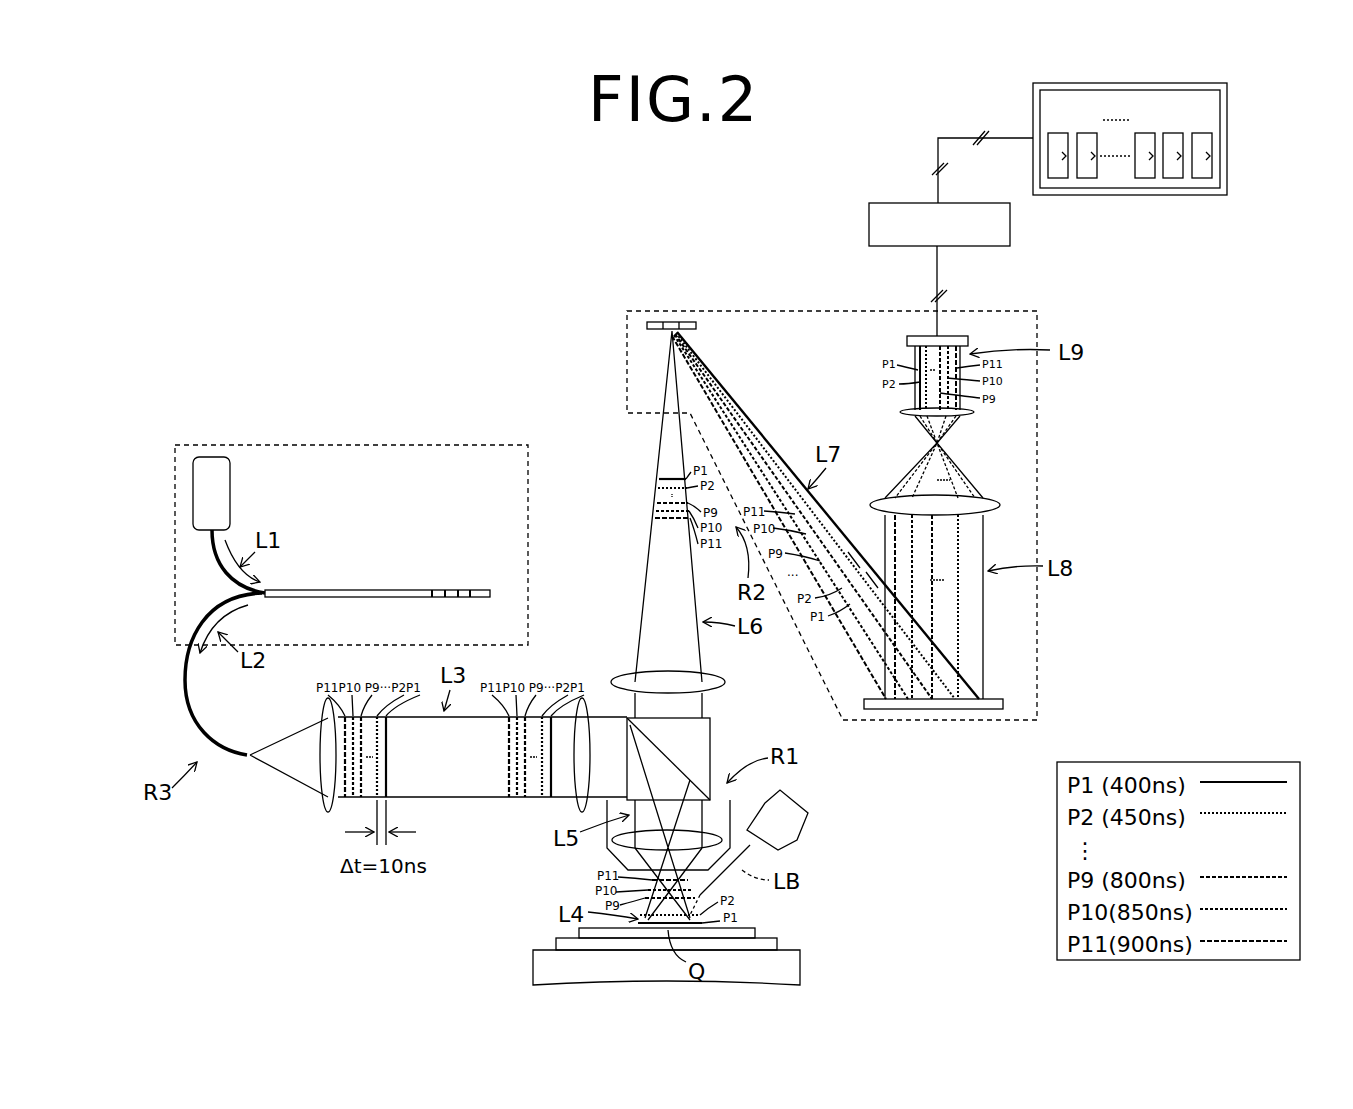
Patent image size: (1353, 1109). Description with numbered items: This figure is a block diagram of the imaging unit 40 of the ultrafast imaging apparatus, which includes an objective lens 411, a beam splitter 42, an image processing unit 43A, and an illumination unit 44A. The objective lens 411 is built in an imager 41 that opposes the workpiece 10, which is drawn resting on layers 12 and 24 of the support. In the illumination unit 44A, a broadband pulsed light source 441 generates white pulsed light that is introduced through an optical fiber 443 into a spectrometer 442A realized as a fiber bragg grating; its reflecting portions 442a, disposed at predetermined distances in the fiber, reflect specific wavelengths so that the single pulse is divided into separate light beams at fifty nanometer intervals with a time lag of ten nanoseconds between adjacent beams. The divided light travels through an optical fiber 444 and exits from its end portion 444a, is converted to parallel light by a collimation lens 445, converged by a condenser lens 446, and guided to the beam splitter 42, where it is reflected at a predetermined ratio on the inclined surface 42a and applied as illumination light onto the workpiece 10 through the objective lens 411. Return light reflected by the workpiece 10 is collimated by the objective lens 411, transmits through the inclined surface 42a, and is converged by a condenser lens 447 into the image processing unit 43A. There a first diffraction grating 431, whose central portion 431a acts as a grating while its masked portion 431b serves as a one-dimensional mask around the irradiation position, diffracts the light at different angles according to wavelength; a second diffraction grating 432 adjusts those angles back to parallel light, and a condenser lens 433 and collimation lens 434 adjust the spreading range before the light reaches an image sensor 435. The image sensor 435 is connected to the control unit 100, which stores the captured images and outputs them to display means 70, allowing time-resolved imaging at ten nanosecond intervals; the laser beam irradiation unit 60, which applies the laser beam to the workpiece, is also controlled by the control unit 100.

The imaging unit 40 is at (468, 337).
The illumination unit 44A is at (528, 548).
The broadband pulsed light source 441 is at (231, 483).
The spectrometer 442A is at (378, 589).
The reflecting portion 442a is at (470, 590).
The optical fiber 443 is at (255, 590).
The optical fiber 444 is at (185, 665).
The end portion 444a is at (248, 753).
The collimation lens 445 is at (325, 805).
The condenser lens 446 is at (585, 699).
The condenser lens 447 is at (720, 679).
The beam splitter 42 is at (712, 725).
The inclined surface 42a is at (663, 766).
The imager 41 is at (606, 838).
The objective lens 411 is at (716, 838).
The laser beam irradiation unit 60 is at (812, 822).
The workpiece 10 is at (752, 928).
The protective tape 12 is at (776, 940).
The chuck table 24 is at (800, 968).
The image processing unit 43A is at (1037, 622).
The first diffraction grating 431 is at (684, 320).
The central portion 431a is at (661, 331).
The masked portion 431b is at (688, 331).
The second diffraction grating 432 is at (975, 710).
The condenser lens 433 is at (1000, 503).
The collimation lens 434 is at (972, 414).
The image sensor 435 is at (969, 338).
The control unit 100 is at (919, 203).
The display means 70 is at (1145, 196).